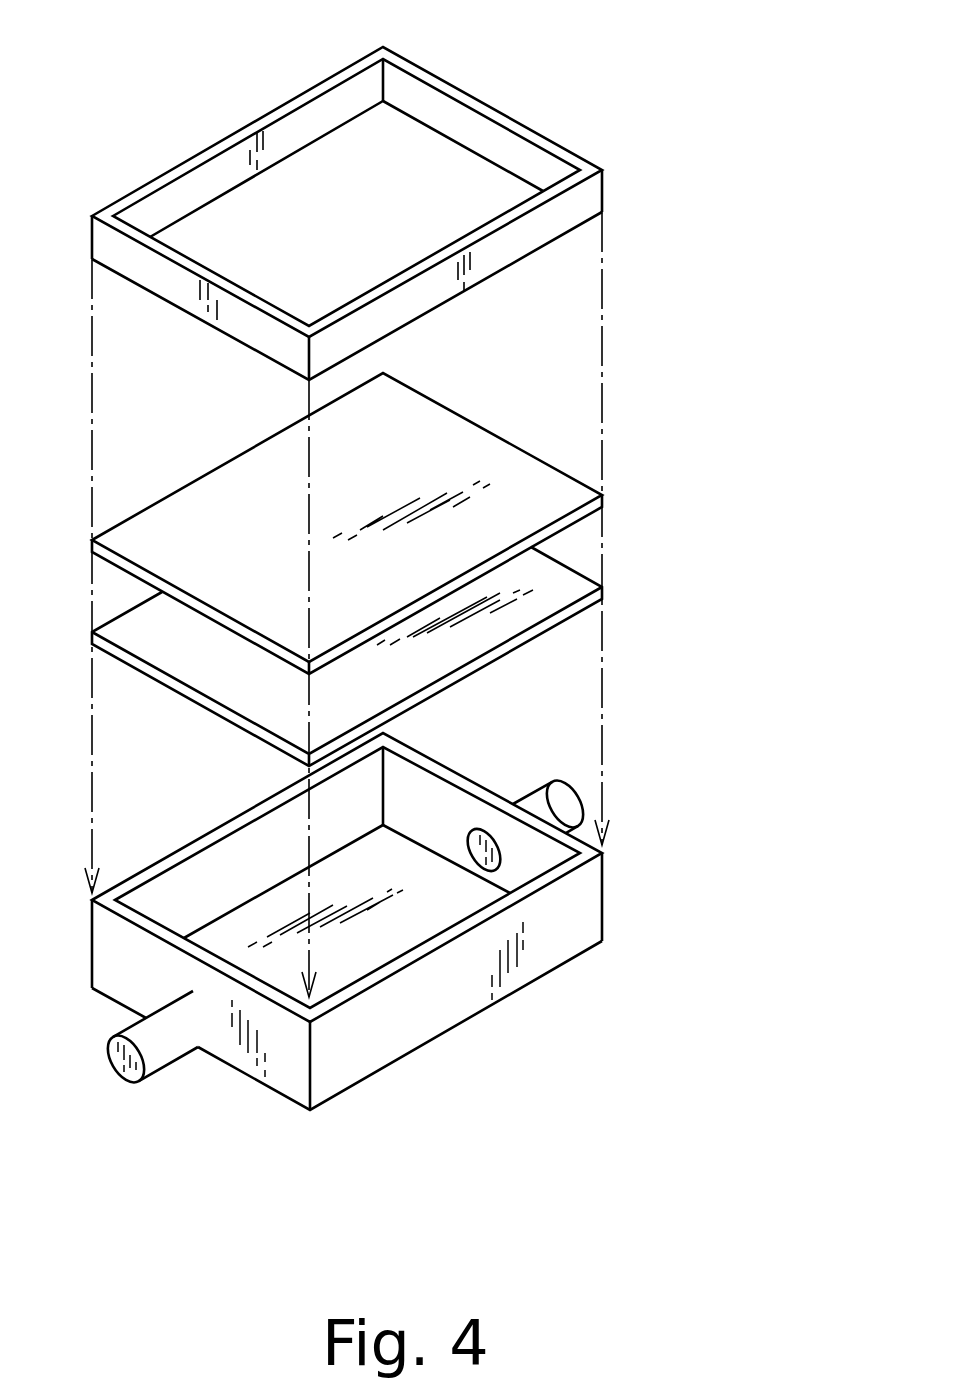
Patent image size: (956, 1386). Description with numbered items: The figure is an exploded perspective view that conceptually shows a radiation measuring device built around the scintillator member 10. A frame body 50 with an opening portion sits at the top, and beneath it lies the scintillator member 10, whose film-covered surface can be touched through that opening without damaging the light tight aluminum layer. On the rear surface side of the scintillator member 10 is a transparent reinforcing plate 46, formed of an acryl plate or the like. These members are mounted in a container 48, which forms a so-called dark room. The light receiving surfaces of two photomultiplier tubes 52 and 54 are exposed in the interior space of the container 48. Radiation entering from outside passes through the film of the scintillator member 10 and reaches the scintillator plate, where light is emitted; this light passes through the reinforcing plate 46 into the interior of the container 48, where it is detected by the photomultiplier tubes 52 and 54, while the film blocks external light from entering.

The frame body 50 is at (552, 138).
The scintillator member 10 is at (523, 445).
The transparent reinforcing plate 46 is at (585, 570).
The container 48 is at (604, 898).
The photomultiplier tube 52 is at (168, 1062).
The photomultiplier tube 54 is at (573, 788).